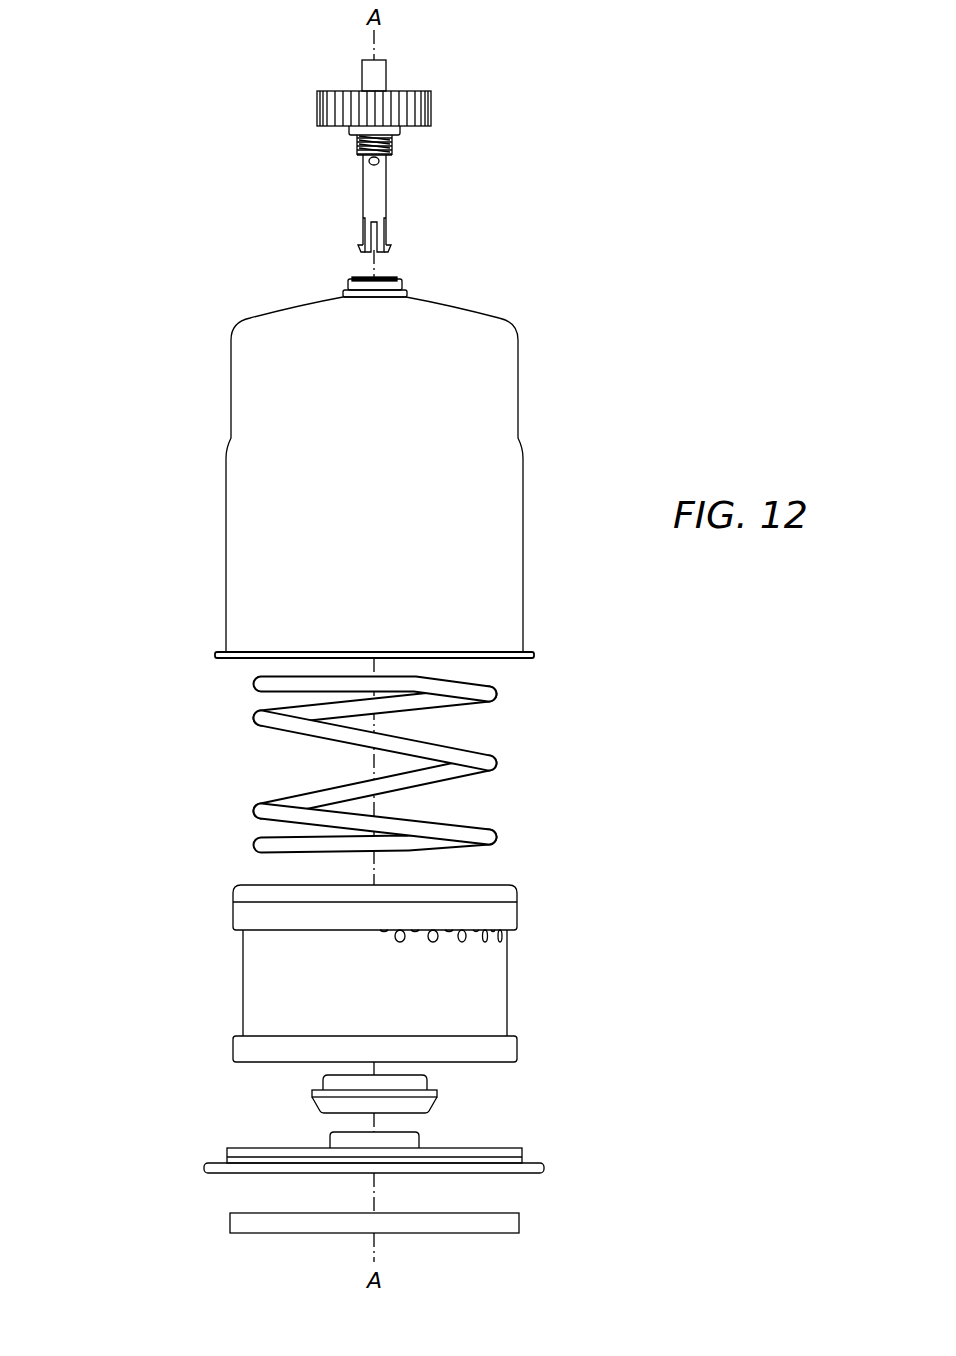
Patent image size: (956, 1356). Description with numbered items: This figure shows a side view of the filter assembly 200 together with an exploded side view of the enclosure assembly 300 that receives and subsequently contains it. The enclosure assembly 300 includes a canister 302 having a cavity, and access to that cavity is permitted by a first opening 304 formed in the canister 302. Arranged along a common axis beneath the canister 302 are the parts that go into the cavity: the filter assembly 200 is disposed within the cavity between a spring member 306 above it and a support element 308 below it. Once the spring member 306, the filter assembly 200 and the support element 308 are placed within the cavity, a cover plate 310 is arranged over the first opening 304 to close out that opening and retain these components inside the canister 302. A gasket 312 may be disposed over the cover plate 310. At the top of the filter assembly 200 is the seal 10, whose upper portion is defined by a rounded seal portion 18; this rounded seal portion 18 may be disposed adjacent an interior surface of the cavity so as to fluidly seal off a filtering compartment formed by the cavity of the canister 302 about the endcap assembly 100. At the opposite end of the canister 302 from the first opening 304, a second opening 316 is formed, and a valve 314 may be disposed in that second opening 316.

The enclosure assembly 300 is at (656, 80).
The canister 302 is at (212, 415).
The first opening 304 is at (513, 670).
The spring member 306 is at (239, 805).
The support element 308 is at (457, 1098).
The cover plate 310 is at (554, 1156).
The gasket 312 is at (530, 1225).
The valve 314 is at (344, 200).
The second opening 316 is at (387, 268).
The endcap assembly 100 is at (504, 878).
The seal 10 is at (522, 915).
The rounded seal portion 18 is at (217, 897).
The filter assembly 200 is at (204, 988).